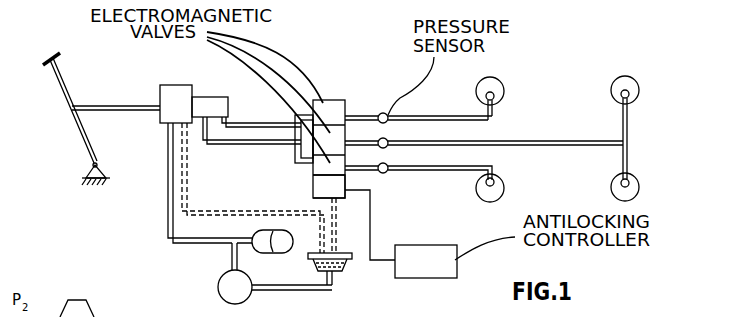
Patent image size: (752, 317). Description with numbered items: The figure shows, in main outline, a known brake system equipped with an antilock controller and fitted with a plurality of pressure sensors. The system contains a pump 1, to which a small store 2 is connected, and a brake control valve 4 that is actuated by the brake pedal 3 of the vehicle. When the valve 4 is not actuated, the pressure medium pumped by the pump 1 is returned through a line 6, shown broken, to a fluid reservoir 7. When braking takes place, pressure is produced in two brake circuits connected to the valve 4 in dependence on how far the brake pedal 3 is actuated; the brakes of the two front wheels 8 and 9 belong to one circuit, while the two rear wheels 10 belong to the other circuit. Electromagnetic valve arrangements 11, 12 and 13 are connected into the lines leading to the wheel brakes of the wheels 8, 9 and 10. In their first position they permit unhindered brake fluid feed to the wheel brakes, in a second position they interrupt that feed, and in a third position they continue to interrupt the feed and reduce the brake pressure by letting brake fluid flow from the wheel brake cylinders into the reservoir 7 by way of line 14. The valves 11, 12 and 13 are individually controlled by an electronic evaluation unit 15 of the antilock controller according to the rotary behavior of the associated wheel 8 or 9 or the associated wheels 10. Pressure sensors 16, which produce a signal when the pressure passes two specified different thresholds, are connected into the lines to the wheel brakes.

The pump 1 is at (218, 290).
The small store 2 is at (267, 251).
The brake pedal 3 is at (82, 144).
The brake control valve 4 is at (174, 90).
The line 6 is at (214, 212).
The fluid reservoir 7 is at (342, 273).
The front wheel 8 is at (504, 86).
The front wheel 9 is at (498, 201).
The rear wheels 10 is at (630, 168).
The electromagnetic valve arrangement 11 is at (341, 100).
The electromagnetic valve arrangement 12 is at (352, 172).
The electromagnetic valve arrangement 13 is at (383, 112).
The line 14 is at (336, 223).
The electronic evaluation unit 15 is at (431, 279).
The pressure sensors 16 is at (390, 167).